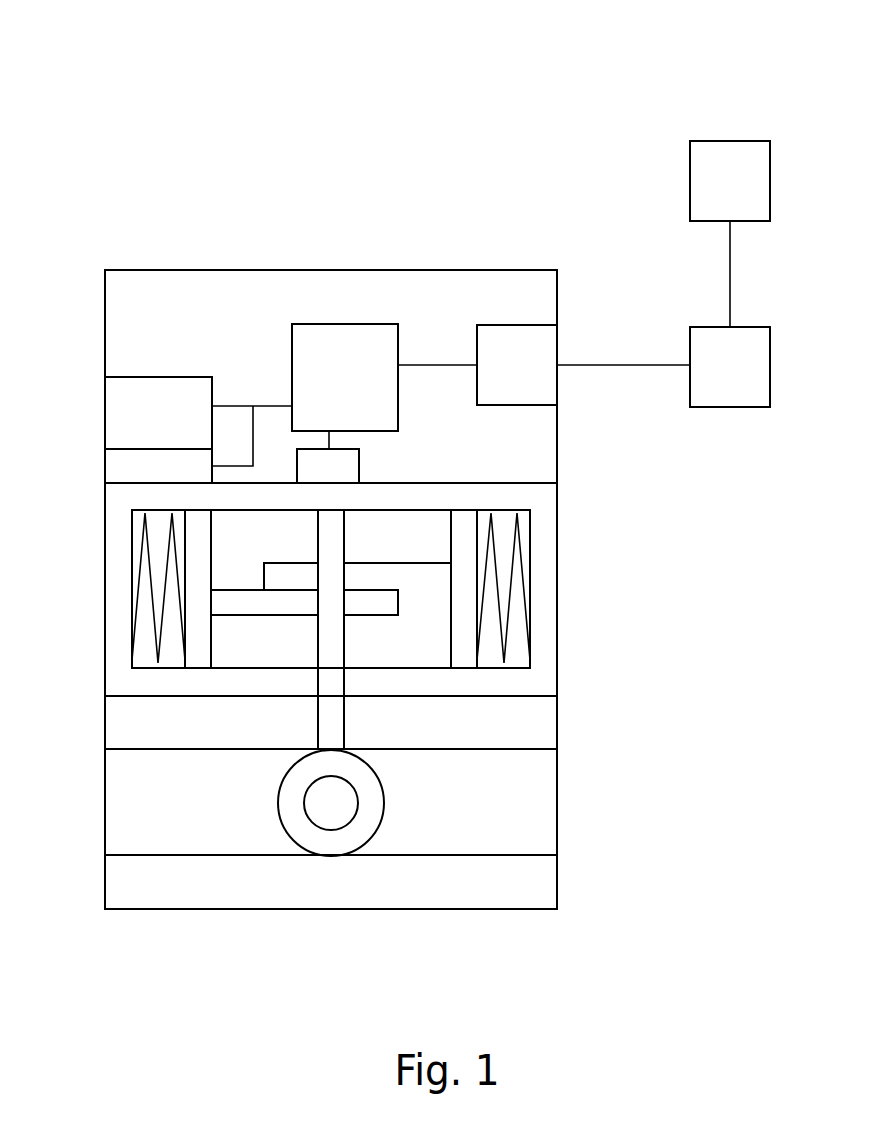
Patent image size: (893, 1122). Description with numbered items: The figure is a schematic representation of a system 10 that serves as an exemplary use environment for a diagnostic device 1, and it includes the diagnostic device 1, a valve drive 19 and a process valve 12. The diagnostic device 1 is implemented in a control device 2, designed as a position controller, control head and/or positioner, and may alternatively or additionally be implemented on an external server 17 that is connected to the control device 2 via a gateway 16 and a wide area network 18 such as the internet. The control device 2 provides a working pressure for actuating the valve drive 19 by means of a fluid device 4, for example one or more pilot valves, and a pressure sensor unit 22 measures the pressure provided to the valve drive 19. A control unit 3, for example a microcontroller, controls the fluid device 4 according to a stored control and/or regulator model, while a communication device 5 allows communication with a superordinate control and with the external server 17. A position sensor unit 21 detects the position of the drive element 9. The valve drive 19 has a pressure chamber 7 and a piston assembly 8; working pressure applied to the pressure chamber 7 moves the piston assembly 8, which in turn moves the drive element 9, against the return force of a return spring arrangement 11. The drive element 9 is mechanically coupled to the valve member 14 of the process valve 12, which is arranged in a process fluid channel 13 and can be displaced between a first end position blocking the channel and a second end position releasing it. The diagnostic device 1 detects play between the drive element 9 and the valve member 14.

The system 10 is at (185, 126).
The diagnostic device 1 is at (394, 525).
The control device 2 is at (557, 458).
The control unit 3 is at (345, 377).
The fluid device 4 is at (158, 413).
The communication device 5 is at (477, 365).
The position sensor unit 21 is at (328, 457).
The pressure sensor unit 22 is at (158, 466).
The gateway 16 is at (663, 367).
The external server 17 is at (730, 181).
The wide area network 18 is at (730, 273).
The pressure chamber 7 is at (425, 657).
The piston assembly 8 is at (200, 660).
The drive element 9 is at (326, 543).
The return spring arrangement 11 is at (143, 558).
The valve drive 19 is at (105, 668).
The process fluid channel 13 is at (522, 808).
The valve member 14 is at (290, 815).
The process valve 12 is at (557, 885).